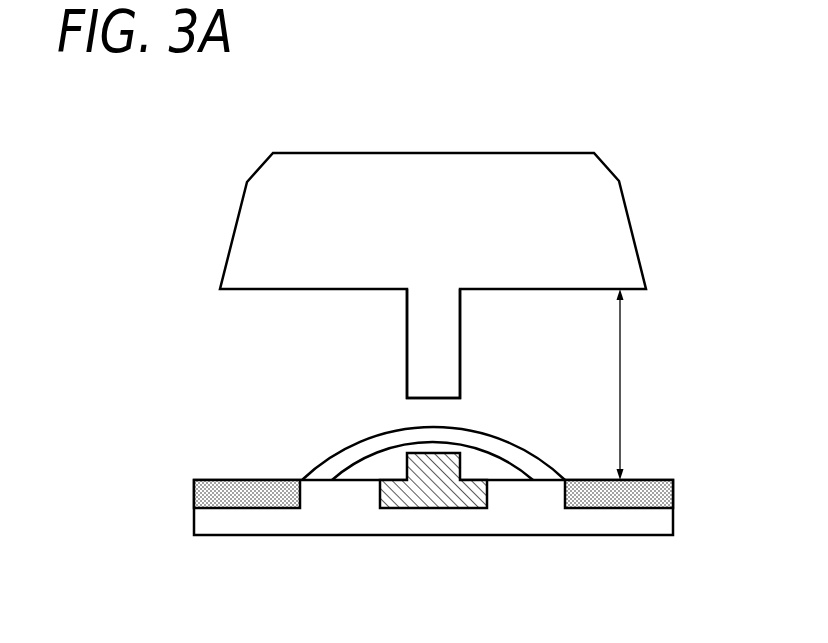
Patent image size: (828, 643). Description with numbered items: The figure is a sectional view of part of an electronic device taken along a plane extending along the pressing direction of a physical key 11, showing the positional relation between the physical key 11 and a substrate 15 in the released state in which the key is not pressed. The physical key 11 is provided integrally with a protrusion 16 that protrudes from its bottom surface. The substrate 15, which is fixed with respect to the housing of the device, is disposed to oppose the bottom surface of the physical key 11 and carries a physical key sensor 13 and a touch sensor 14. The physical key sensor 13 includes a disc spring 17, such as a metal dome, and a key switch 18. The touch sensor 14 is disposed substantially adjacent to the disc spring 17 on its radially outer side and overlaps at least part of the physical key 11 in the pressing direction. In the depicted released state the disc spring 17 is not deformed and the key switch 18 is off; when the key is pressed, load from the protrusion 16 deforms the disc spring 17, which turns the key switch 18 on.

The physical key 11 is at (540, 163).
The physical key sensor 13 is at (300, 578).
The touch sensor 14 is at (220, 488).
The substrate 15 is at (183, 480).
The protrusion 16 is at (415, 350).
The disc spring 17 is at (325, 470).
The key switch 18 is at (397, 500).